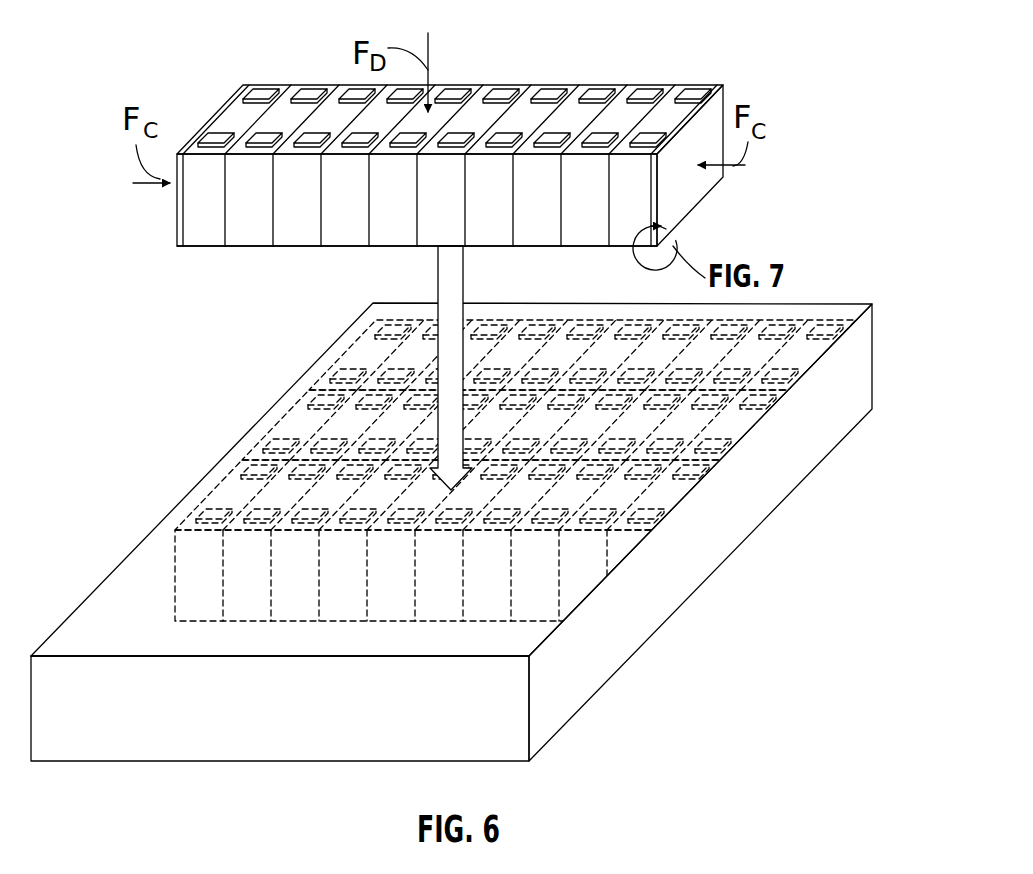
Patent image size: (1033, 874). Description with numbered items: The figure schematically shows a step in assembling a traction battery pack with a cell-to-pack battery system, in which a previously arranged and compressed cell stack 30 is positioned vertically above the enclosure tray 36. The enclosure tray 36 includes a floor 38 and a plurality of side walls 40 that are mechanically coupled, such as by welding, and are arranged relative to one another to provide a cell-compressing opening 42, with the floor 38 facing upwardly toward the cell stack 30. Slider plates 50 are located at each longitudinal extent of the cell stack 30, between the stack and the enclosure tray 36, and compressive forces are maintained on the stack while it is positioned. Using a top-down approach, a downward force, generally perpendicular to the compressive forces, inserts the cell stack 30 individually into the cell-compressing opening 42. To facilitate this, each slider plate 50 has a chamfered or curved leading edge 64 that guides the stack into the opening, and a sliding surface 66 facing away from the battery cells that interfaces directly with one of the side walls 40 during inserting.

The cell stack 30 is at (428, 165).
The slider plate 50 is at (212, 116).
The sliding surface 66 is at (177, 200).
The leading edge 64 is at (178, 256).
The enclosure tray 36 is at (489, 532).
The floor 38 is at (229, 653).
The side wall 40 is at (82, 629).
The cell-compressing opening 42 is at (160, 564).